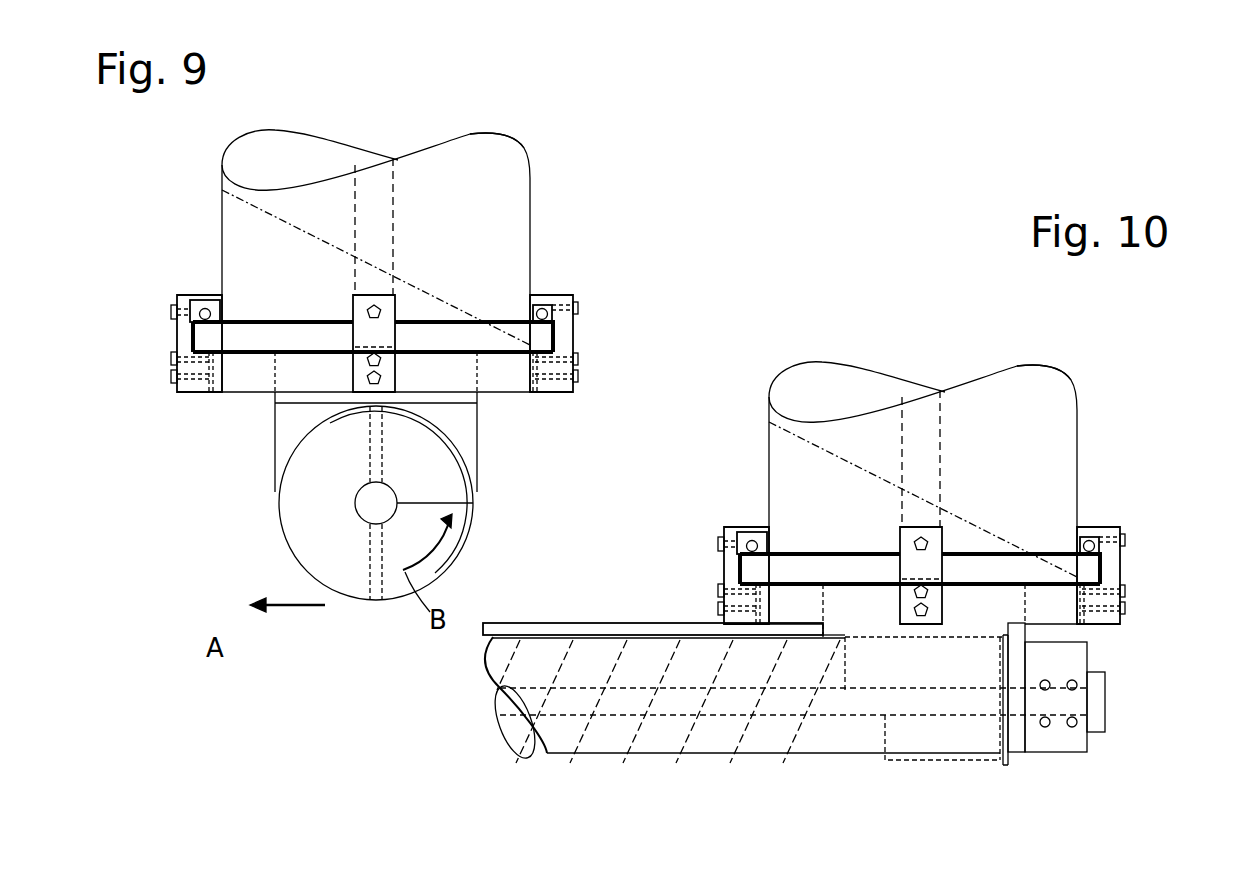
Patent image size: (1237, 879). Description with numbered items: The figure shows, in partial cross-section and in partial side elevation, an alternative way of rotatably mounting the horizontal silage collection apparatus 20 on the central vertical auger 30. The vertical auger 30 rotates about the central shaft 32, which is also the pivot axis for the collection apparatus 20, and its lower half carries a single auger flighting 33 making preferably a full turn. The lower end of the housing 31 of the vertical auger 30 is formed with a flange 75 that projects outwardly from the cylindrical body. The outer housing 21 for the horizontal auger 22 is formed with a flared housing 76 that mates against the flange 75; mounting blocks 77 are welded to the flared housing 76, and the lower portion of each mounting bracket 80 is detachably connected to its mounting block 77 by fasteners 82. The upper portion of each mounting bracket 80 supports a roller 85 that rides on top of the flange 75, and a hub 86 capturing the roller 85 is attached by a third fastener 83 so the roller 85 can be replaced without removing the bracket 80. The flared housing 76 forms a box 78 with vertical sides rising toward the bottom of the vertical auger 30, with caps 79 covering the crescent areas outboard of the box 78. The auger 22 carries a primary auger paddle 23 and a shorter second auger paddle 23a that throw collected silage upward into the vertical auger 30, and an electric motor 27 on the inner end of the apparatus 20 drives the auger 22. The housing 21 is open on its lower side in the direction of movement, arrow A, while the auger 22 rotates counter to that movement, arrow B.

In FIG. 9, the silage collection apparatus 20 is at (362, 620).
In FIG. 10, the silage collection apparatus 20 is at (512, 752).
In FIG. 9, the outer housing 21 is at (477, 527).
In FIG. 10, the outer housing 21 is at (607, 755).
In FIG. 9, the auger 22 is at (430, 572).
In FIG. 9, the auger paddle 23 is at (368, 470).
In FIG. 10, the auger paddle 23 is at (895, 660).
In FIG. 9, the second auger paddle 23a is at (368, 553).
In FIG. 10, the second auger paddle 23a is at (973, 762).
In FIG. 10, the electric motor 27 is at (1085, 742).
In FIG. 9, the central vertical auger 30 is at (409, 113).
In FIG. 10, the central vertical auger 30 is at (1062, 422).
In FIG. 9, the housing 31 is at (524, 149).
In FIG. 10, the housing 31 is at (1043, 365).
In FIG. 9, the central shaft 32 is at (399, 177).
In FIG. 10, the central shaft 32 is at (943, 406).
In FIG. 9, the auger flighting 33 is at (400, 295).
In FIG. 10, the auger flighting 33 is at (950, 513).
In FIG. 9, the flange 75 is at (555, 338).
In FIG. 10, the flange 75 is at (773, 568).
In FIG. 9, the flared housing 76 is at (257, 383).
In FIG. 10, the flared housing 76 is at (803, 608).
In FIG. 9, the mounting block 77 is at (212, 393).
In FIG. 10, the mounting block 77 is at (752, 626).
In FIG. 9, the box 78 is at (275, 446).
In FIG. 10, the box 78 is at (828, 610).
In FIG. 9, the cap 79 is at (245, 352).
In FIG. 10, the cap 79 is at (797, 583).
In FIG. 9, the mounting bracket 80 is at (177, 333).
In FIG. 10, the mounting bracket 80 is at (731, 527).
In FIG. 9, the fastener 82 is at (150, 370).
In FIG. 10, the fastener 82 is at (695, 602).
In FIG. 9, the third fastener 83 is at (172, 307).
In FIG. 10, the third fastener 83 is at (718, 542).
In FIG. 9, the roller 85 is at (210, 299).
In FIG. 10, the roller 85 is at (757, 537).
In FIG. 9, the hub 86 is at (197, 300).
In FIG. 10, the hub 86 is at (750, 540).